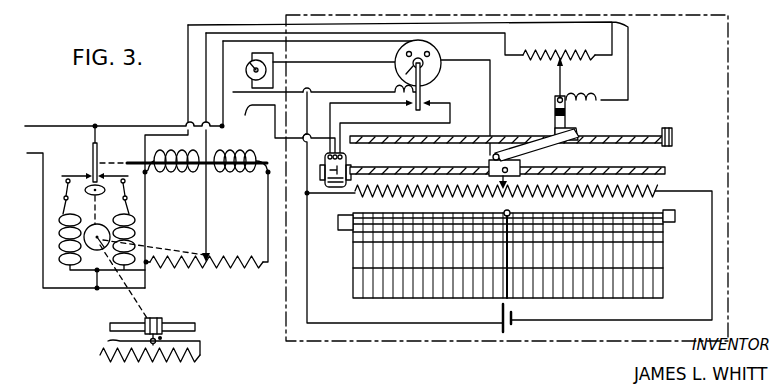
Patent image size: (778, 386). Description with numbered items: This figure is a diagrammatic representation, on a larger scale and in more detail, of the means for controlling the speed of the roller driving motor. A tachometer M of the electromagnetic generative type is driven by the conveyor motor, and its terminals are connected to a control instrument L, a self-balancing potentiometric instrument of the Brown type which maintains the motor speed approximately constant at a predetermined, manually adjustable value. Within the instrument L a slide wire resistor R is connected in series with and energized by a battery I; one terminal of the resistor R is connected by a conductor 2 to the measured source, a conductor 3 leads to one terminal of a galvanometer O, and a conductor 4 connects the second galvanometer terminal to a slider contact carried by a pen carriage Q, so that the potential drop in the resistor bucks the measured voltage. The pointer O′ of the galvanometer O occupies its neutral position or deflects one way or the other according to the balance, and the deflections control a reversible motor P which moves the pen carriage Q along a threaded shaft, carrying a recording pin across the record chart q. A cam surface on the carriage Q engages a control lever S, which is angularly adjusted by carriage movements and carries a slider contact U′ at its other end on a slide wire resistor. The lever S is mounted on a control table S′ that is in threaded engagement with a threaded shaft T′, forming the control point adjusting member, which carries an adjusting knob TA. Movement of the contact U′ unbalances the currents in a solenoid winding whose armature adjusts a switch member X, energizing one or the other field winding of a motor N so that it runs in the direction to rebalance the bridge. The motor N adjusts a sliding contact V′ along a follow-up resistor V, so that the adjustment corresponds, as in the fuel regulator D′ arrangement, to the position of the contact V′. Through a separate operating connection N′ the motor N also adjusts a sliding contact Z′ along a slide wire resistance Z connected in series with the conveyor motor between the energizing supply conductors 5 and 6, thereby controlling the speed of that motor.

The energizing supply conductor 5 is at (33, 126).
The energizing supply conductor 6 is at (33, 157).
The conductor 2 is at (310, 91).
The conductor 3 is at (313, 62).
The conductor 4 is at (492, 90).
The tachometer M is at (247, 62).
The switch member X is at (99, 160).
The motor N is at (91, 229).
The operating connection N′ is at (130, 292).
The resistor V is at (255, 256).
The contact V′ is at (213, 256).
The fuel regulator D′ is at (153, 320).
The sliding contact Z′ is at (148, 342).
The slide wire resistance Z is at (137, 362).
The galvanometer O is at (398, 70).
The pointer O′ is at (432, 86).
The reversible motor P is at (346, 165).
The pen carriage Q is at (490, 166).
The control lever S is at (528, 150).
The control table S′ is at (568, 136).
The threaded shaft T′ is at (625, 135).
The adjusting knob TA is at (670, 130).
The slider contact U′ is at (562, 78).
The slide wire resistor R is at (650, 188).
The control instrument L is at (732, 230).
The record chart q is at (655, 258).
The battery I is at (503, 320).